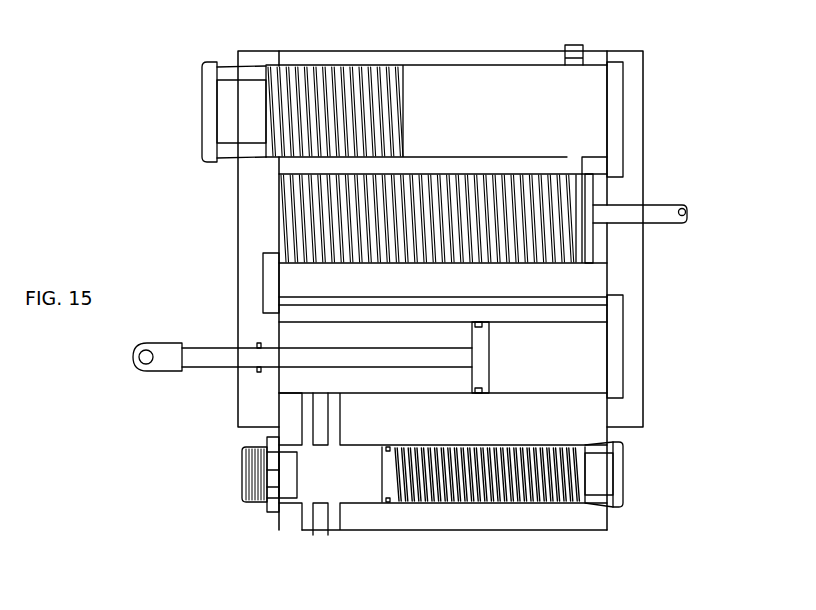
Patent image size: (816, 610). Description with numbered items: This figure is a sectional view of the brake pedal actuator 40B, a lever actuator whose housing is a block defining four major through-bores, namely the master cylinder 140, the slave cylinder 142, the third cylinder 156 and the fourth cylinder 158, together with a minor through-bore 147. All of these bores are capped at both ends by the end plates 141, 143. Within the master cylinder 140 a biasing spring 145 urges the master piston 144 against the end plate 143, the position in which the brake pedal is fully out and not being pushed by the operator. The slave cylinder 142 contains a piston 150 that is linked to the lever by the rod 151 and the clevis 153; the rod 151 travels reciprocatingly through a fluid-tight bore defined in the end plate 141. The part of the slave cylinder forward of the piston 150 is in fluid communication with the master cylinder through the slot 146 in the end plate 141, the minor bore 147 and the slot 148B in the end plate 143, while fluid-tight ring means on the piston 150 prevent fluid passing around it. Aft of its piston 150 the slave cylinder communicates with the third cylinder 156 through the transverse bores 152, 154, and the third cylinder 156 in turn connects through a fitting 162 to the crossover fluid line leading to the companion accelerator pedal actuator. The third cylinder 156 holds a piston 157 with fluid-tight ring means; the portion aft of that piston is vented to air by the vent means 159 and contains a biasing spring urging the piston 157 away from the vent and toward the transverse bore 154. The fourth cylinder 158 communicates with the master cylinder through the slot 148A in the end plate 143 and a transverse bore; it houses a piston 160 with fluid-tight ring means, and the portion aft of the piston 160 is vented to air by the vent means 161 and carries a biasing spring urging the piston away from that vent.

The brake pedal actuator 40B is at (450, 25).
The end plate 141 is at (250, 212).
The end plate 143 is at (638, 172).
The slot 148A is at (617, 113).
The slot 148B is at (615, 335).
The fourth cylinder 158 is at (510, 125).
The piston 160 is at (322, 68).
The vent means 161 is at (202, 85).
The master cylinder 140 is at (450, 255).
The biasing spring 145 is at (523, 250).
The master piston 144 is at (587, 237).
The slot 146 is at (263, 304).
The minor through-bore 147 is at (357, 297).
The piston 150 is at (477, 375).
The rod 151 is at (230, 360).
The clevis 153 is at (163, 360).
The slave cylinder 142 is at (562, 368).
The transverse bore 152 is at (335, 415).
The transverse bore 154 is at (312, 410).
The third cylinder 156 is at (353, 492).
The piston 157 is at (410, 495).
The vent means 159 is at (621, 468).
The fitting 162 is at (242, 475).